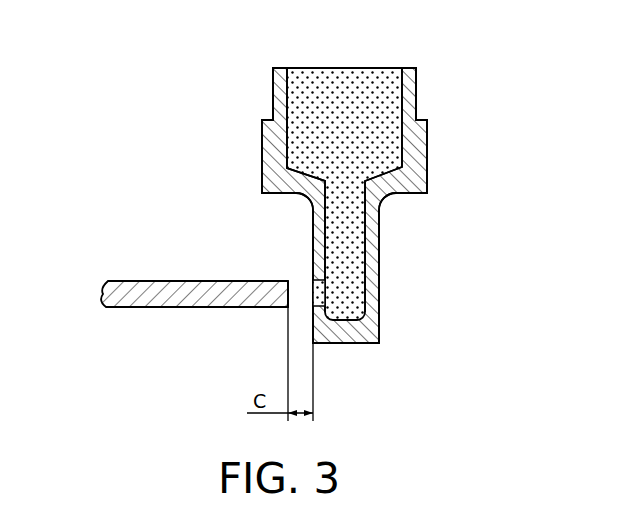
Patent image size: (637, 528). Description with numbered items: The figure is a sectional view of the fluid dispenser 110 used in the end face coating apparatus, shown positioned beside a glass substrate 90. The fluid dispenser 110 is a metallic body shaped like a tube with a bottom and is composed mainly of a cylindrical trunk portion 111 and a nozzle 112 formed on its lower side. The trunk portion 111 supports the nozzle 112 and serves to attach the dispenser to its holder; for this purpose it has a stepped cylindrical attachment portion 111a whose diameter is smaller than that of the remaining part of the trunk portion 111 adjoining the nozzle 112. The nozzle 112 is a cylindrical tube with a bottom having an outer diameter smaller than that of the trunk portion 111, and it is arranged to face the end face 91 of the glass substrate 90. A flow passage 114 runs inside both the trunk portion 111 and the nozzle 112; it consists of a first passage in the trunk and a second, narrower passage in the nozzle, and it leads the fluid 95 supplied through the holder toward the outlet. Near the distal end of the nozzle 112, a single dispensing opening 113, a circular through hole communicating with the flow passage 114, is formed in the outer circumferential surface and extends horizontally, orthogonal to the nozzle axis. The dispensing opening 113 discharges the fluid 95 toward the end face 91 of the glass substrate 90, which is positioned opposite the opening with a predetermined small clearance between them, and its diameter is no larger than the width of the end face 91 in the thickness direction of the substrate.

The fluid dispenser 110 is at (244, 52).
The fluid 95 is at (347, 75).
The trunk portion 111 is at (428, 143).
The attachment portion 111a is at (417, 83).
The nozzle 112 is at (380, 248).
The dispensing opening 113 is at (320, 298).
The flow passage 114 is at (291, 145).
The glass substrate 90 is at (113, 281).
The end face 91 is at (289, 281).